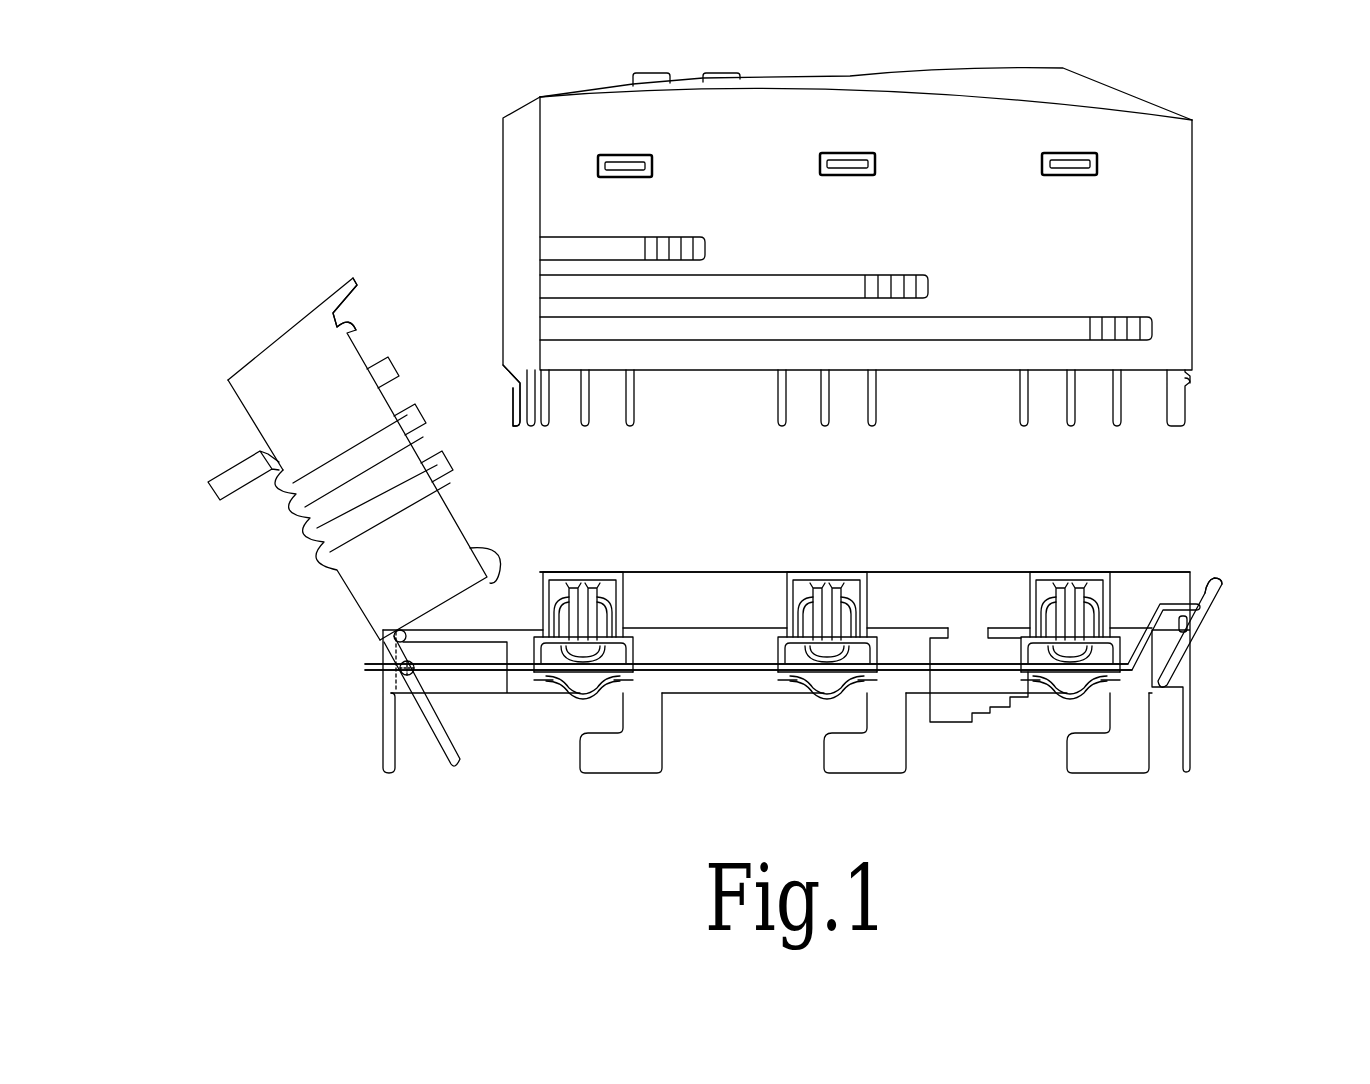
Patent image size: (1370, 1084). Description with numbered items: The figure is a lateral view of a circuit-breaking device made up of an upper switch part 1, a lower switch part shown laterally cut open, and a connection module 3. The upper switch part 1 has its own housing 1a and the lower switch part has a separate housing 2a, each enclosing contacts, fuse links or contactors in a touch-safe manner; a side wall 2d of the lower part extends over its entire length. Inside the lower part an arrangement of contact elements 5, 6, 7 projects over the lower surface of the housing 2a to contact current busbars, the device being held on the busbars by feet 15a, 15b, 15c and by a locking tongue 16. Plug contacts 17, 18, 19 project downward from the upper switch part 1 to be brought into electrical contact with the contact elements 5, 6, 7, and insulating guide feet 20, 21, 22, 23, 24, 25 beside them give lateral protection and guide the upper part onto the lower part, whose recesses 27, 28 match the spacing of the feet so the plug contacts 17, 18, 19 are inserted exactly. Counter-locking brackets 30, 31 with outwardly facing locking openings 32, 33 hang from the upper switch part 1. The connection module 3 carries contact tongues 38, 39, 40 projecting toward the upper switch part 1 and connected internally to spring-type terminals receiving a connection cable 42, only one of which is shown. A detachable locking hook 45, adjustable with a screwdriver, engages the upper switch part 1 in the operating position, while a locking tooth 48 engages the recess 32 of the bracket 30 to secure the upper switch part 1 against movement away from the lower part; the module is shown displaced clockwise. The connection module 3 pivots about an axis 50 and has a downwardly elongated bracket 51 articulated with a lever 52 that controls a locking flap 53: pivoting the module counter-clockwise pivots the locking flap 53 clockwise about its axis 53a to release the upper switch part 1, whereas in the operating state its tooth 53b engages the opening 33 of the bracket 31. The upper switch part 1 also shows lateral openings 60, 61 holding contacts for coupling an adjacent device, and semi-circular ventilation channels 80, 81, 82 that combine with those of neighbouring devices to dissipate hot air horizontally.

The upper switch part 1 is at (876, 299).
The housing of upper switch part 1a is at (1178, 140).
The housing of lower switch part 2a is at (749, 533).
The side wall 2d is at (675, 577).
The connection module 3 is at (329, 435).
The contact element 5 is at (601, 583).
The contact element 6 is at (829, 582).
The contact element 7 is at (1083, 585).
The foot 15a is at (622, 757).
The foot 15b is at (862, 752).
The foot 15c is at (1112, 750).
The locking tongue 16 is at (957, 695).
The plug contact 17 is at (586, 427).
The plug contact 18 is at (826, 427).
The plug contact 19 is at (1073, 427).
The guide foot 20 is at (549, 407).
The guide foot 21 is at (635, 417).
The guide foot 22 is at (777, 417).
The guide foot 23 is at (878, 420).
The guide foot 24 is at (1020, 417).
The guide foot 25 is at (1118, 417).
The recess 27 is at (738, 618).
The recess 28 is at (975, 618).
The bracket 30 is at (525, 427).
The bracket 31 is at (1188, 405).
The locking opening 32 is at (513, 388).
The locking opening 33 is at (1186, 385).
The contact tongue 38 is at (388, 368).
The contact tongue 39 is at (424, 432).
The contact tongue 40 is at (452, 465).
The connection cable 42 is at (243, 488).
The locking hook 45 is at (358, 318).
The locking tooth 48 is at (495, 556).
The axis 50 is at (400, 668).
The bracket 51 is at (437, 742).
The lever 52 is at (725, 668).
The locking flap 53 is at (1253, 632).
The axis of locking flap 53a is at (1185, 632).
The tooth of locking flap 53b is at (1222, 582).
The lateral opening 60 is at (643, 138).
The lateral opening 61 is at (849, 153).
The ventilation channel 80 is at (617, 237).
The ventilation channel 81 is at (827, 275).
The ventilation channel 82 is at (1034, 317).